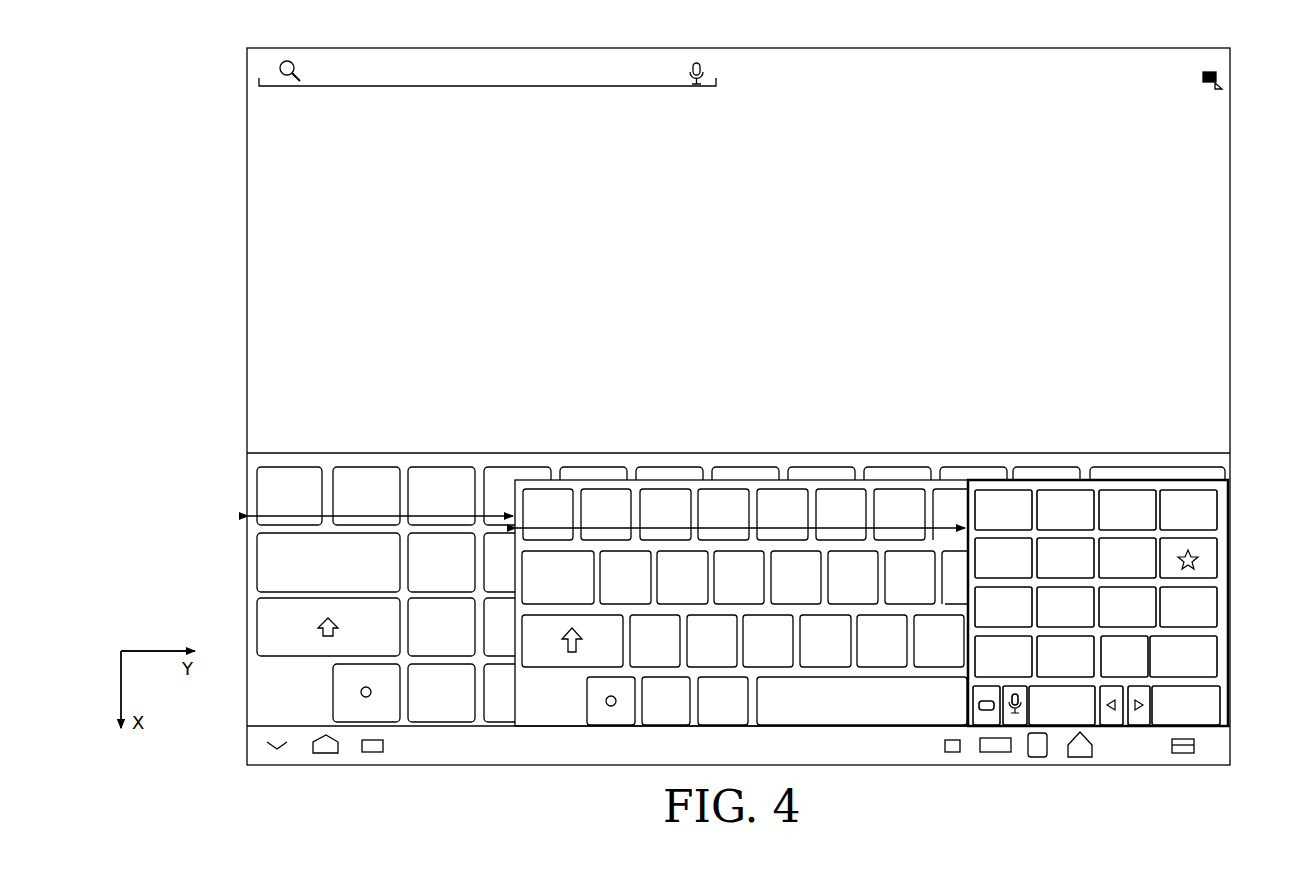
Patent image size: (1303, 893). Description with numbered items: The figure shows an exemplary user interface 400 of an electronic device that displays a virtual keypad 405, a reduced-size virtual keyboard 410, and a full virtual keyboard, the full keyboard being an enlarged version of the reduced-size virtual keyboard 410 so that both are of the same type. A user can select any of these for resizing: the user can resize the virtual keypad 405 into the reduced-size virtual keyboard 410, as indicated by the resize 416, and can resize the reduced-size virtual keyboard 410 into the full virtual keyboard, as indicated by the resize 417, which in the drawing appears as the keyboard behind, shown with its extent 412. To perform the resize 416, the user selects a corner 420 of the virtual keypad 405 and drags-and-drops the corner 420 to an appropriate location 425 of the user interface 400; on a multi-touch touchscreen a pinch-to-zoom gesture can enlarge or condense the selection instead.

The user interface 400 is at (1233, 107).
The virtual keypad 405 is at (1098, 576).
The reduced-size virtual keyboard 410 is at (668, 489).
The width of original virtual keyboard 412 is at (736, 574).
The resize of the virtual keypad into the reduced-size virtual keyboard 416 is at (589, 527).
The resize of the reduced-size virtual keyboard into the full virtual keyboard 417 is at (367, 467).
The corner of the virtual keypad 420 is at (969, 480).
The location of the user interface 425 is at (741, 576).